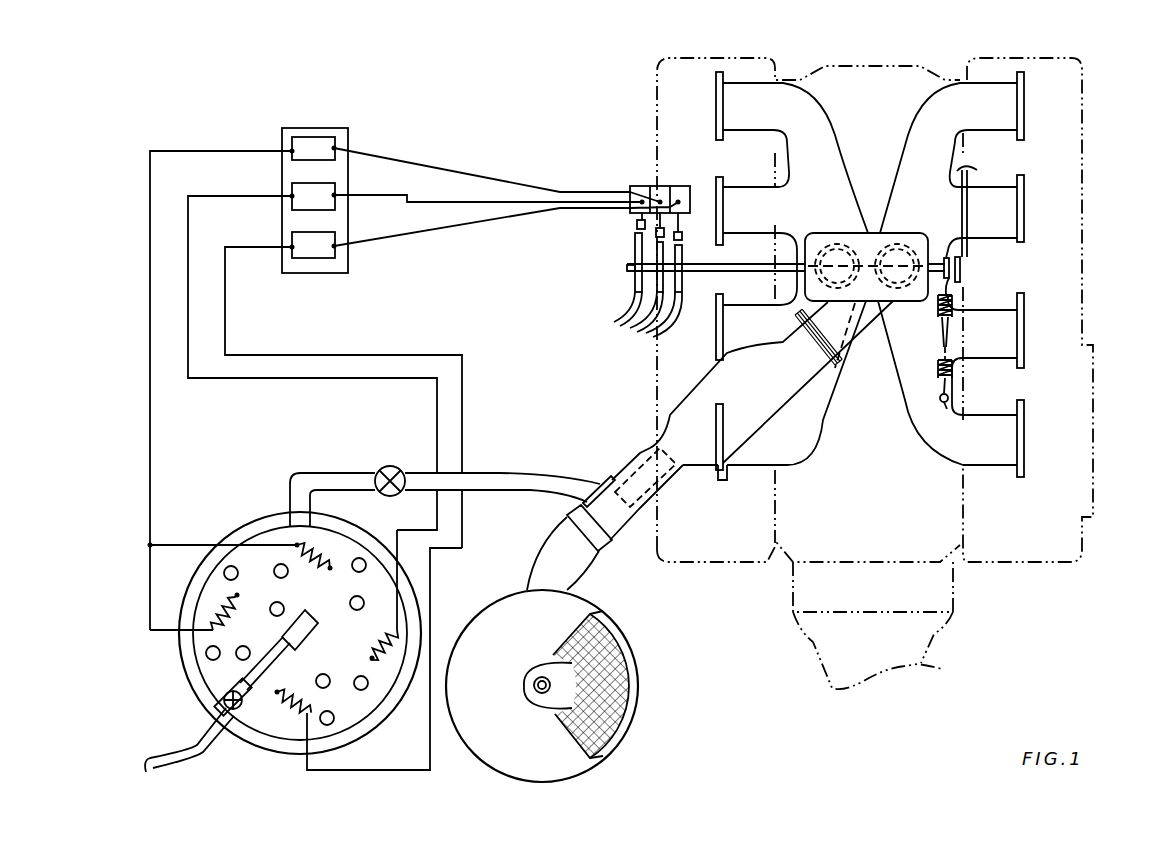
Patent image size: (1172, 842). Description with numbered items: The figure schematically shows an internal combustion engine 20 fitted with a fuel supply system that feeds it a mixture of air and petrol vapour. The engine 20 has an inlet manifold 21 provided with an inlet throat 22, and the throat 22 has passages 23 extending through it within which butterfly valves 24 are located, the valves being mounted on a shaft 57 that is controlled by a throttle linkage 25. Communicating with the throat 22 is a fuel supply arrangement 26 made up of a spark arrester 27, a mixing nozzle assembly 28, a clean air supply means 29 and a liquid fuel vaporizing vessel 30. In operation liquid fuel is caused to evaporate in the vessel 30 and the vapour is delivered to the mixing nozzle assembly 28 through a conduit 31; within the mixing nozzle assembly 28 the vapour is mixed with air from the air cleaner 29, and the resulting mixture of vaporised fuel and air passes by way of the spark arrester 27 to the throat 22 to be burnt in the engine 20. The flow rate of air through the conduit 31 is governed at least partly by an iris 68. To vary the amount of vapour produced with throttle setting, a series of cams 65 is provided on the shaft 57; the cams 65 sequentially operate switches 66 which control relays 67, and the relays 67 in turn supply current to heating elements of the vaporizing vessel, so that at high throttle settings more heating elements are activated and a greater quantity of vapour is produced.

The internal combustion engine 20 is at (1104, 229).
The inlet manifold 21 is at (822, 155).
The inlet throat 22 is at (869, 232).
The passages 23 is at (824, 244).
The butterfly valves 24 is at (902, 244).
The throttle linkage 25 is at (967, 253).
The fuel supply arrangement 26 is at (532, 318).
The spark arrester 27 is at (759, 407).
The mixing nozzle assembly 28 is at (641, 450).
The clean air supply means 29 is at (541, 641).
The liquid fuel vaporizing vessel 30 is at (246, 524).
The conduit 31 is at (502, 478).
The shaft 57 is at (727, 264).
The cams 65 is at (613, 326).
The switches 66 is at (660, 187).
The relays 67 is at (330, 168).
The iris 68 is at (600, 548).